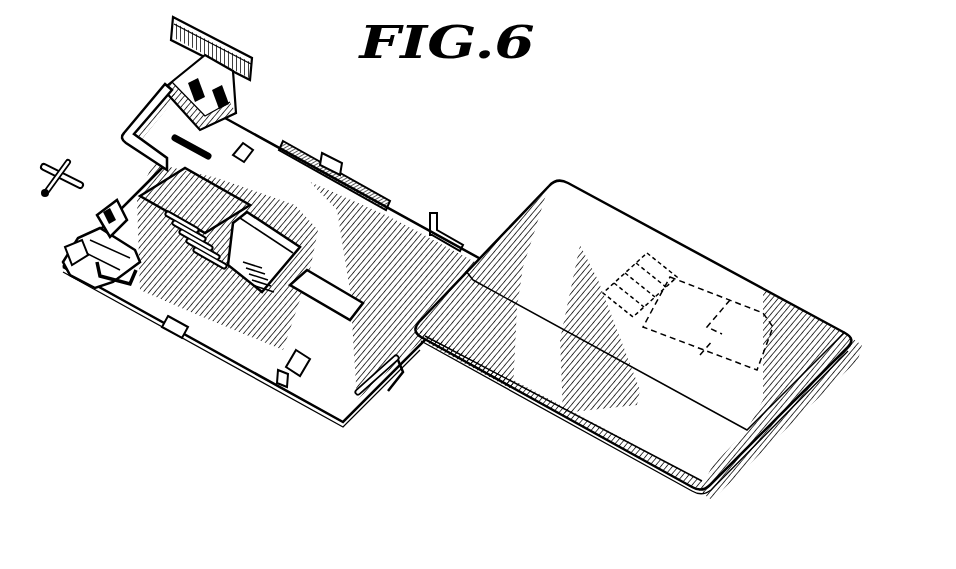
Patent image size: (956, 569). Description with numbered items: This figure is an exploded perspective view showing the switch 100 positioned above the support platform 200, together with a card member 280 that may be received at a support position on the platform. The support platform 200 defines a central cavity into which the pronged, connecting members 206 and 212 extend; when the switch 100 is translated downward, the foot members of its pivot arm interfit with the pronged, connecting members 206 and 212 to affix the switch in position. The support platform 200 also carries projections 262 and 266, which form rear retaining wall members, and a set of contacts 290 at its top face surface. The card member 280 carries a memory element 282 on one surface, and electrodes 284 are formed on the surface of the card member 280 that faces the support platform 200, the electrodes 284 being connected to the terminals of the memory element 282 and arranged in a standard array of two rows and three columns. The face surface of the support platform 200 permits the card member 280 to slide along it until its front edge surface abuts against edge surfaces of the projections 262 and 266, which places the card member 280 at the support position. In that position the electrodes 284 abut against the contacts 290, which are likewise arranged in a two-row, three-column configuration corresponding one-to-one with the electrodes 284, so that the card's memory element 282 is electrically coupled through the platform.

The switch 100 is at (58, 168).
The support platform 200 is at (267, 160).
The pronged connecting member 206 is at (97, 234).
The pronged connecting member 212 is at (107, 267).
The projection 262 is at (97, 220).
The projection 266 is at (83, 243).
The card member 280 is at (620, 227).
The memory element 282 is at (775, 323).
The electrodes 284 is at (670, 280).
The contacts 290 is at (175, 232).